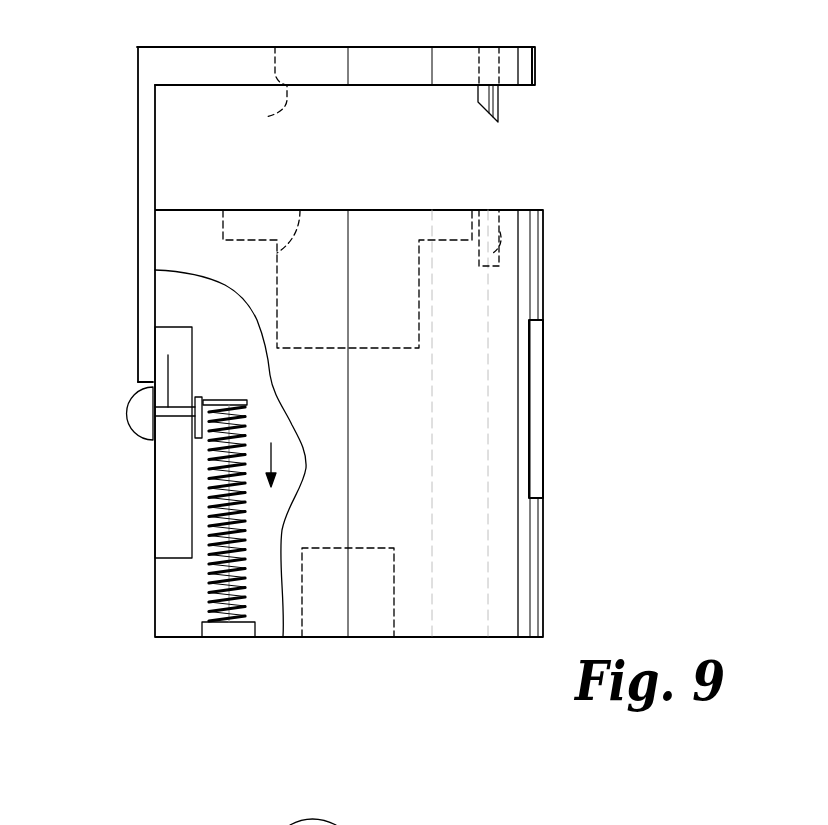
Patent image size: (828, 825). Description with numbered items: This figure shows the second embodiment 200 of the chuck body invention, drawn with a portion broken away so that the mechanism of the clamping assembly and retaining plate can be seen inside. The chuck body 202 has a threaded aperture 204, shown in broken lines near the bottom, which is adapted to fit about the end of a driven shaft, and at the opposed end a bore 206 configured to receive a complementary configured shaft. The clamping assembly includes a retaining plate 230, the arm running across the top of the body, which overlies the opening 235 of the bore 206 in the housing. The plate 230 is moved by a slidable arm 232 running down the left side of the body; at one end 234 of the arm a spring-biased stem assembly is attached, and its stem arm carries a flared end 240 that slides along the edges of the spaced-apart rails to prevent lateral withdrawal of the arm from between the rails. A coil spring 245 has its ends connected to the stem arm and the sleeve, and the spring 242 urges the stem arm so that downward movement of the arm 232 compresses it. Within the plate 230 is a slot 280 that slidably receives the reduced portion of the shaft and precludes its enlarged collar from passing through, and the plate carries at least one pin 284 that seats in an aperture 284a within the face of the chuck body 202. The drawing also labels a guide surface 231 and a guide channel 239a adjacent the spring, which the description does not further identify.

The second embodiment 200 is at (620, 38).
The chuck body 202 is at (501, 669).
The threaded aperture 204 is at (394, 600).
The bore 206 is at (300, 207).
The retaining plate 230 is at (224, 52).
The guide surface 231 is at (168, 355).
The slidable arm 232 is at (137, 152).
The end of arm 234 is at (136, 382).
The opening 235 is at (472, 218).
The guide channel 239a is at (167, 512).
The flared end 240 is at (198, 397).
The spring 242 is at (247, 512).
The spring 245 is at (143, 601).
The slot 280 is at (249, 92).
The pin 284 is at (499, 95).
The aperture 284a is at (525, 232).